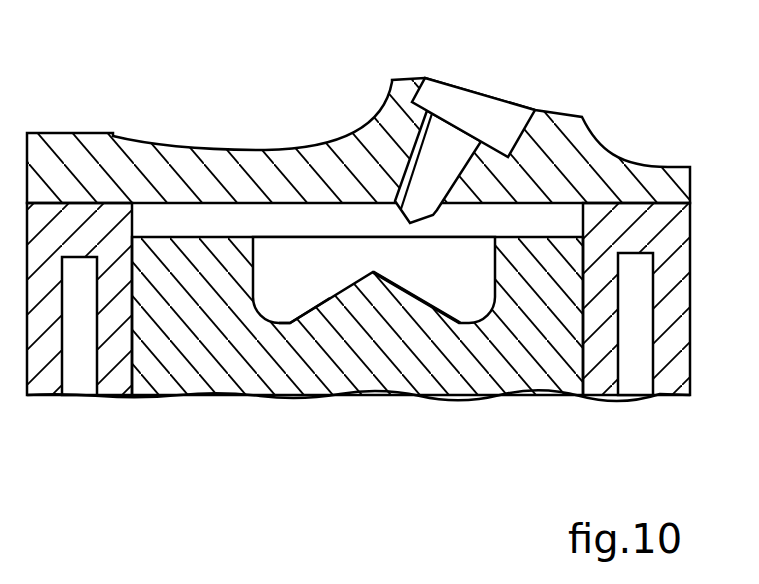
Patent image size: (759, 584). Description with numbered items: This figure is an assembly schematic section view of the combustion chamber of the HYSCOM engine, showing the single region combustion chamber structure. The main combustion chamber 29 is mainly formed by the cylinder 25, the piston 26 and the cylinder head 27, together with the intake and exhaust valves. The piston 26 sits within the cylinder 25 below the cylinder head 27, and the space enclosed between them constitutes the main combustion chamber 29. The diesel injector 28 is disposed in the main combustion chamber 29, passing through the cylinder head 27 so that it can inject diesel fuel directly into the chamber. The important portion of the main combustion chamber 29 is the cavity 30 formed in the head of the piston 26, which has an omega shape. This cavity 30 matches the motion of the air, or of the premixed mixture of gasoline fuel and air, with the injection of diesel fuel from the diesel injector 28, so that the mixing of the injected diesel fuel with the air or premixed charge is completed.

The cylinder 25 is at (603, 343).
The piston 26 is at (357, 260).
The cylinder head 27 is at (580, 148).
The diesel injector 28 is at (477, 110).
The main combustion chamber 29 is at (325, 253).
The cavity 30 is at (300, 322).